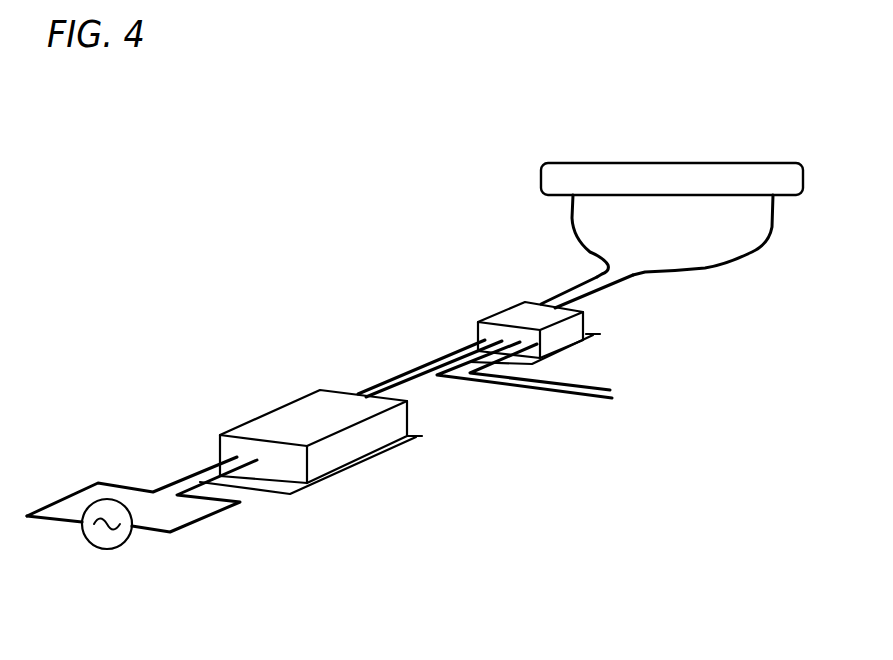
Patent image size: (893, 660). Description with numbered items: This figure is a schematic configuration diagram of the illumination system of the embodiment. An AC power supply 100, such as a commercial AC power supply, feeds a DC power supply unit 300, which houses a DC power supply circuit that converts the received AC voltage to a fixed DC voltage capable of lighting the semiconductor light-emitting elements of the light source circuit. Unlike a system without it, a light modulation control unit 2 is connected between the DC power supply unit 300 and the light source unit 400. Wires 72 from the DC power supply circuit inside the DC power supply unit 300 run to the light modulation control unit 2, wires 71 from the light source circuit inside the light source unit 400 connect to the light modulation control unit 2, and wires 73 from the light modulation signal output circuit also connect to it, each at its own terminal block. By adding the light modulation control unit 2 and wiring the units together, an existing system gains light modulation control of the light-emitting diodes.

The AC power supply 100 is at (88, 545).
The DC power supply unit 300 is at (272, 410).
The light modulation control unit 2 is at (502, 310).
The wires 71 is at (582, 296).
The wires 72 is at (412, 378).
The wires 73 is at (556, 383).
The light source unit 400 is at (710, 163).